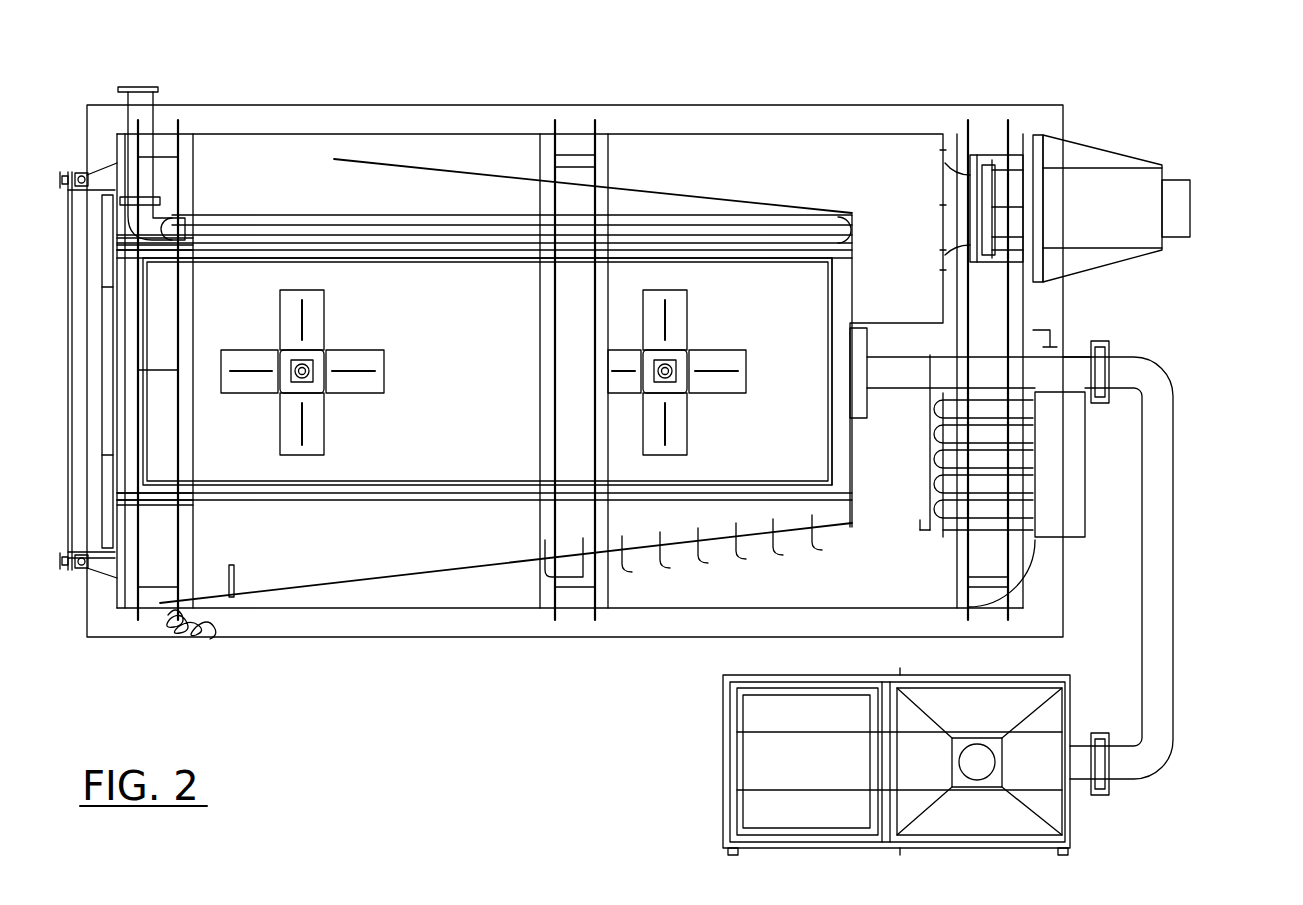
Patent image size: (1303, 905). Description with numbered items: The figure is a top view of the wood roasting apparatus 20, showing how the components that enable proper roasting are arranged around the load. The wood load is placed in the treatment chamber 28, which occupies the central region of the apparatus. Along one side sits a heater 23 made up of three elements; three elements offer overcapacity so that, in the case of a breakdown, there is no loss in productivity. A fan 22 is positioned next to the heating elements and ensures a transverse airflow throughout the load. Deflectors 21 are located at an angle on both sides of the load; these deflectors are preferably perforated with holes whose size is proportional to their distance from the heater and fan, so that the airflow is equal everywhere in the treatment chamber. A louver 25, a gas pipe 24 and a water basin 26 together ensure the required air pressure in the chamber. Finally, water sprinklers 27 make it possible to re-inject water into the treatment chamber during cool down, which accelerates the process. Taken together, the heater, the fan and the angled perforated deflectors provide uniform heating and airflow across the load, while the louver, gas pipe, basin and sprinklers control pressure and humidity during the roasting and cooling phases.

The drying chamber housing 20 is at (215, 212).
The deflector 21 is at (462, 172).
The fan 22 is at (1088, 142).
The heater 23 is at (1090, 528).
The gas pipe 24 is at (1180, 530).
The louver 25 is at (1057, 303).
The water basin 26 is at (723, 814).
The water sprinkler 27 is at (407, 105).
The treatment chamber 28 is at (398, 460).